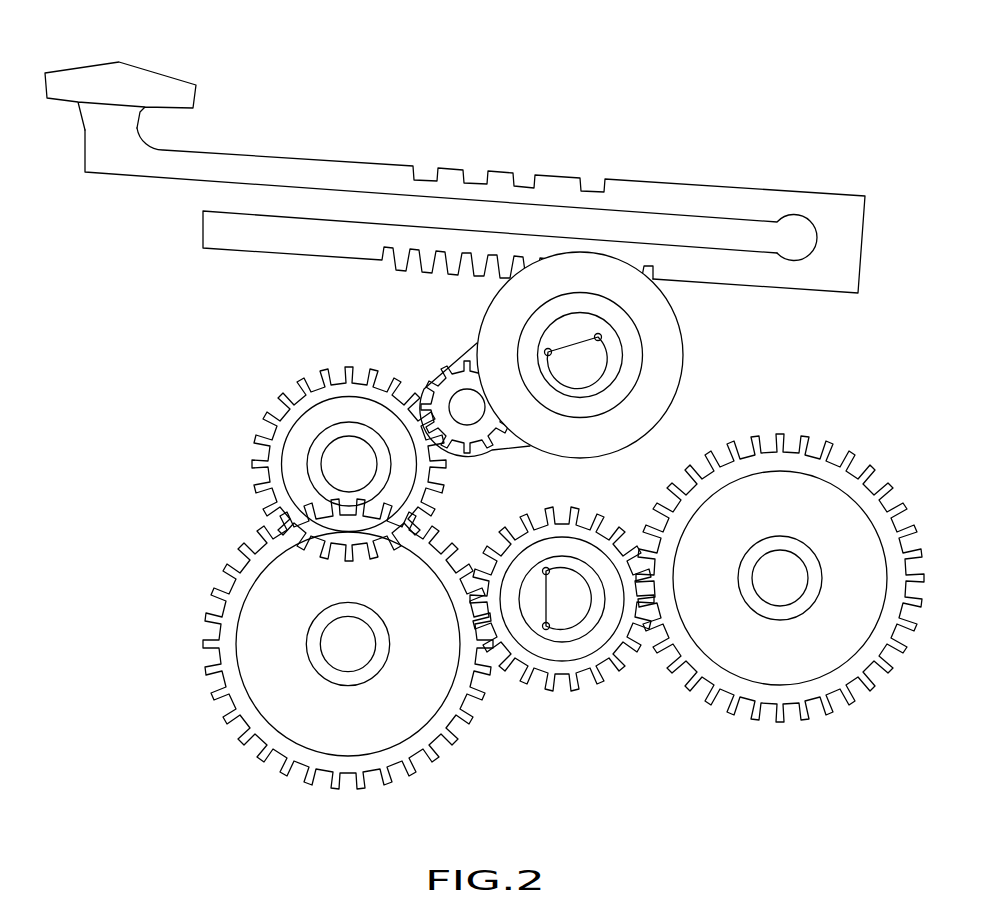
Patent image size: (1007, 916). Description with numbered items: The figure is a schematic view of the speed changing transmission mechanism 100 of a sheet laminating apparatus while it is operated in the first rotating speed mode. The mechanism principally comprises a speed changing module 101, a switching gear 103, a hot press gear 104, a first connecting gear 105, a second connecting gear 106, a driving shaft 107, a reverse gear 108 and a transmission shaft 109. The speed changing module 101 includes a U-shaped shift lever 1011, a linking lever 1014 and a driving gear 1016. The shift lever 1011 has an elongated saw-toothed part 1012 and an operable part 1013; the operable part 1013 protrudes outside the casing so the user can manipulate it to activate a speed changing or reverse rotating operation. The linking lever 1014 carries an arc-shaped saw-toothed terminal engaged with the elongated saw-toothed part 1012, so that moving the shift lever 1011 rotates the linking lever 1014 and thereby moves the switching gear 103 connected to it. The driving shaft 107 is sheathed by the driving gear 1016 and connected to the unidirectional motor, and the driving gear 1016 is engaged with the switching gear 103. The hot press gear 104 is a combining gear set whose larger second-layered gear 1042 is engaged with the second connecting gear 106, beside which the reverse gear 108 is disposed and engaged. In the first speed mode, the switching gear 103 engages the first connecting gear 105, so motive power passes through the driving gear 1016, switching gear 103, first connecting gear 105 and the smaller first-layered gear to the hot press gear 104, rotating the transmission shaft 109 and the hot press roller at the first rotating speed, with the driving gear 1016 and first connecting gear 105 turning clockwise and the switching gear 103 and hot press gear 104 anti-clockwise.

The speed changing transmission mechanism 100 is at (700, 49).
The speed changing module 101 is at (455, 178).
The U-shaped shift lever 1011 is at (352, 162).
The elongated saw-toothed part 1012 is at (398, 255).
The operable part 1013 is at (145, 83).
The linking lever 1014 is at (485, 445).
The driving gear 1016 is at (623, 363).
The switching gear 103 is at (443, 365).
The hot press gear 104 is at (314, 646).
The second-layered gear 1042 is at (230, 593).
The first connecting gear 105 is at (290, 398).
The second connecting gear 106 is at (573, 652).
The driving shaft 107 is at (583, 367).
The reverse gear 108 is at (843, 655).
The transmission shaft 109 is at (362, 651).